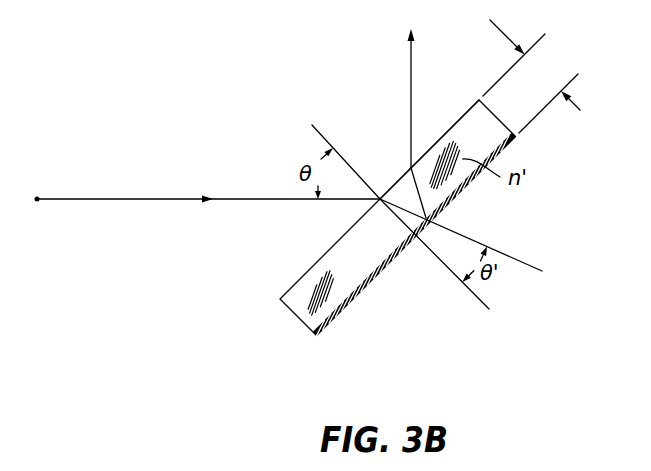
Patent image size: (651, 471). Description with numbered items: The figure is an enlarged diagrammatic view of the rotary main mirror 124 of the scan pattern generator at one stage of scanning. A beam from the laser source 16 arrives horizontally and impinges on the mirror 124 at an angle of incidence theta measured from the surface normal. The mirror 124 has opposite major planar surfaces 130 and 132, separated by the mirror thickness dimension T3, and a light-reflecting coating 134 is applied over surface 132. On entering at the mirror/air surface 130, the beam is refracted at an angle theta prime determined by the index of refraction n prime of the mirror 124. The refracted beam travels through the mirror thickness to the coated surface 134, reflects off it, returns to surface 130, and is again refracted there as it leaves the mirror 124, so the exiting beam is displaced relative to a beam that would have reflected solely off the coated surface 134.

The laser source 16 is at (37, 201).
The rotary main mirror 124 is at (302, 305).
The major planar surface 130 is at (453, 126).
The major planar surface 132 is at (334, 320).
The light-reflecting coating 134 is at (387, 270).
The mirror thickness dimension T3 is at (531, 76).